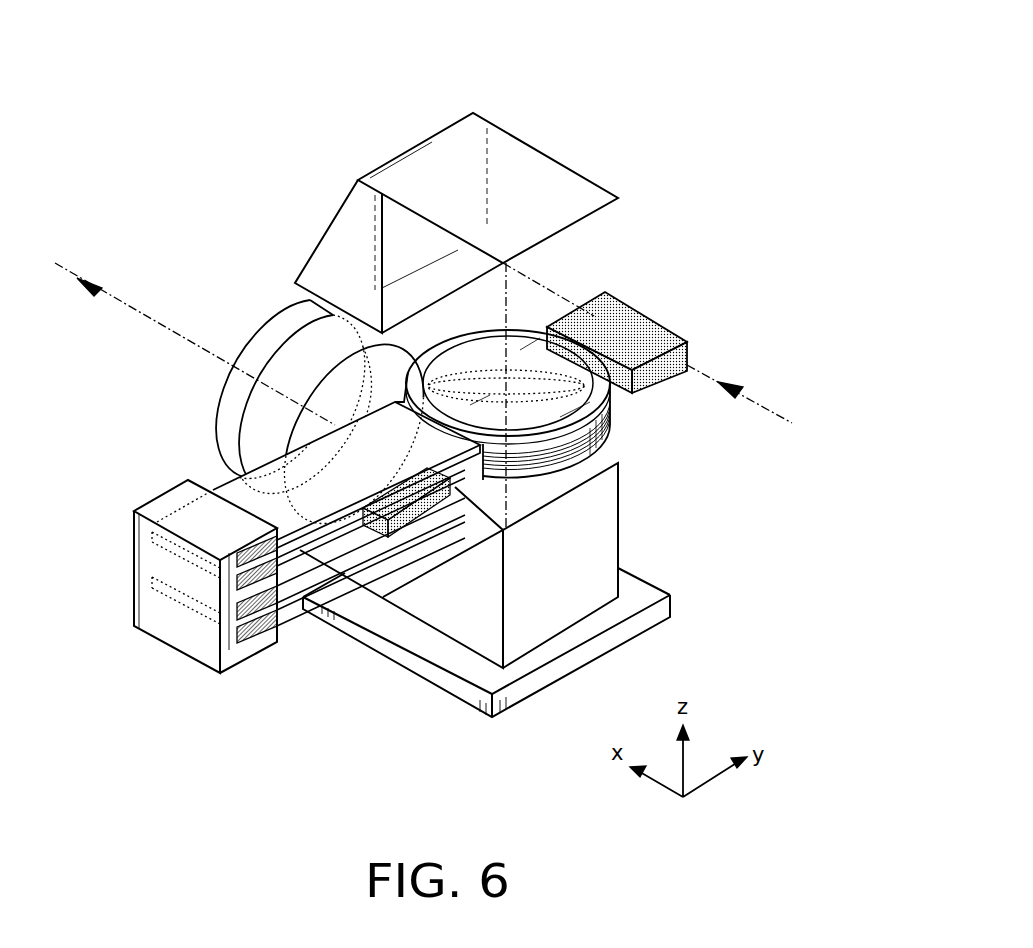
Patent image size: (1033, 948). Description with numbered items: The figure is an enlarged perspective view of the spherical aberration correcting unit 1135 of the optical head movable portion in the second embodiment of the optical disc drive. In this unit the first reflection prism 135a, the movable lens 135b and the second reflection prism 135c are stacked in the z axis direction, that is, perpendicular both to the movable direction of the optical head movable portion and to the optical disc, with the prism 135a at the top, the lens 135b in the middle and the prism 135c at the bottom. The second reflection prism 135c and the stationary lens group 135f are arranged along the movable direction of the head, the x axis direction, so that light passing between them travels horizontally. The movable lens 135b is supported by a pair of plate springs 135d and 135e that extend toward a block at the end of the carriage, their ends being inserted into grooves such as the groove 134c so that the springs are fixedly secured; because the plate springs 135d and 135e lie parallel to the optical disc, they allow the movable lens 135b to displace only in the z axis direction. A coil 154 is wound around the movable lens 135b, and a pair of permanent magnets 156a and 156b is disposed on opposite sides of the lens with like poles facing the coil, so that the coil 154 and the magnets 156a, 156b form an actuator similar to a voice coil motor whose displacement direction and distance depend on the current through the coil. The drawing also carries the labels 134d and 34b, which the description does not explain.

The spherical aberration correcting unit 1135 is at (335, 72).
The first reflection prism 135a is at (553, 178).
The movable lens 135b is at (481, 363).
The second reflection prism 135c is at (598, 516).
The plate spring 135d is at (247, 503).
The plate spring 135e is at (285, 578).
The stationary lens group 135f is at (287, 348).
The groove 134c is at (258, 640).
The actuator block 134d is at (145, 559).
The guide slot 34b is at (192, 648).
The coil 154 is at (597, 467).
The permanent magnet 156a is at (638, 322).
The permanent magnet 156b is at (372, 527).